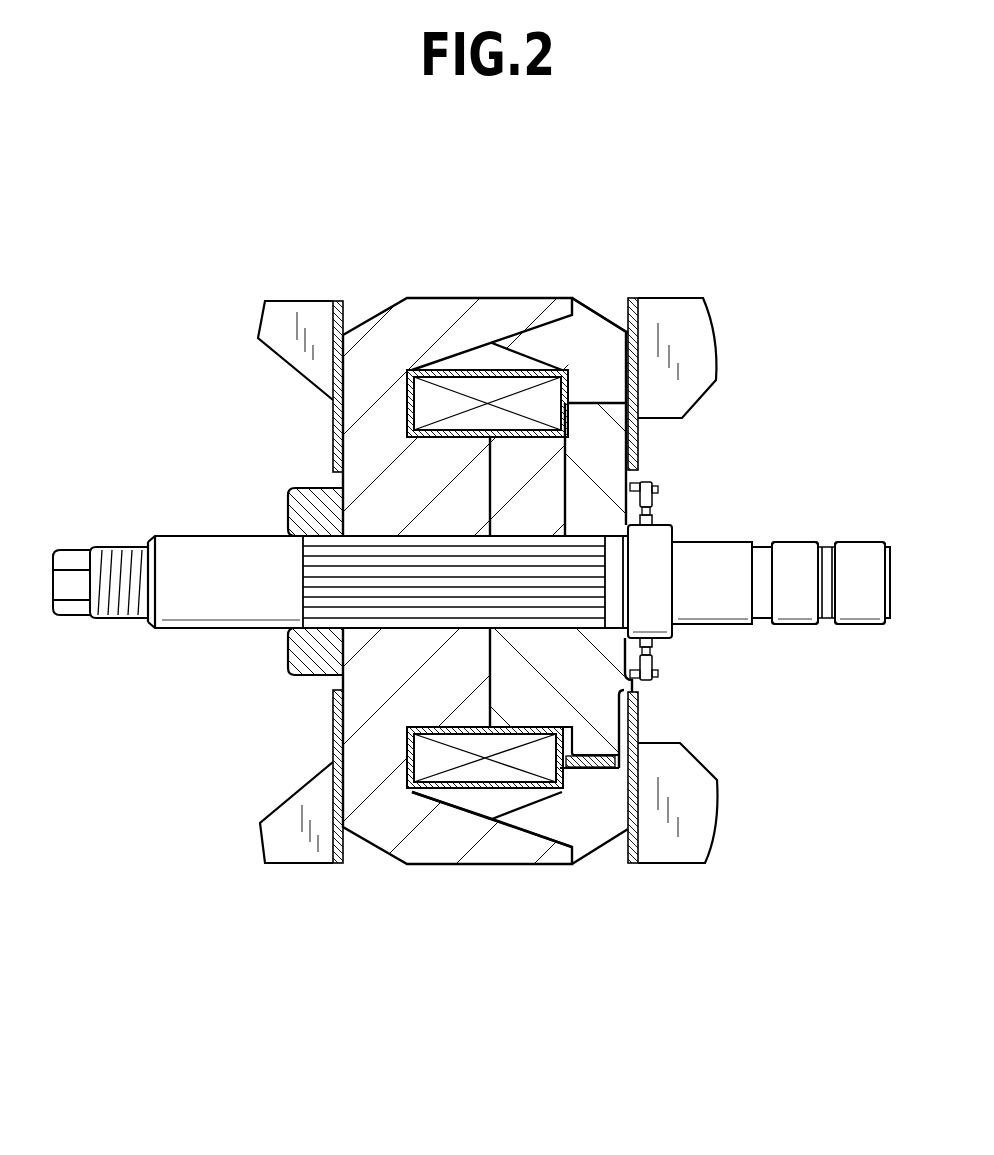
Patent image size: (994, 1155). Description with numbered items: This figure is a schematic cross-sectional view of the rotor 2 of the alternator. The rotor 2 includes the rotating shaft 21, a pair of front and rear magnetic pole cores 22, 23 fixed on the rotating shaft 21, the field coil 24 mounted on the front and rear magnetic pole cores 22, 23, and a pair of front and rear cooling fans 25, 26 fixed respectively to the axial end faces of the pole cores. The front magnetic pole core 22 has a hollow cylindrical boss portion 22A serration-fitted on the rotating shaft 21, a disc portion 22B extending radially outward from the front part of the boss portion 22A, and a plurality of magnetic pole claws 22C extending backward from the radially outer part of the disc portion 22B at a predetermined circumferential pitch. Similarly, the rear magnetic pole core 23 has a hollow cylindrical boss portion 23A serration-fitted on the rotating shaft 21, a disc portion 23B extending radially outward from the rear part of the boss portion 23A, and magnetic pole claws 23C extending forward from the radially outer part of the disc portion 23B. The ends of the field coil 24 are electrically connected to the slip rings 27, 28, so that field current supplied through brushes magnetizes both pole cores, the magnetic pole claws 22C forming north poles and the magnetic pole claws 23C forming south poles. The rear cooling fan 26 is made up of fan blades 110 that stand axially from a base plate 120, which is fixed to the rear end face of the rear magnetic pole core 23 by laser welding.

The rotor 2 is at (714, 170).
The rotating shaft 21 is at (210, 553).
The front magnetic pole core 22 is at (393, 292).
The boss portion 22A is at (418, 638).
The disc portion 22B is at (372, 737).
The magnetic pole claws 22C is at (505, 850).
The rear magnetic pole core 23 is at (578, 290).
The boss portion 23A is at (640, 461).
The disc portion 23B is at (610, 445).
The magnetic pole claws 23C is at (588, 343).
The field coil 24 is at (488, 390).
The front cooling fan 25 is at (300, 290).
The rear cooling fan 26 is at (700, 288).
The slip ring 27 is at (795, 553).
The slip ring 28 is at (863, 553).
The fan blades 110 is at (713, 808).
The base plate 120 is at (635, 713).